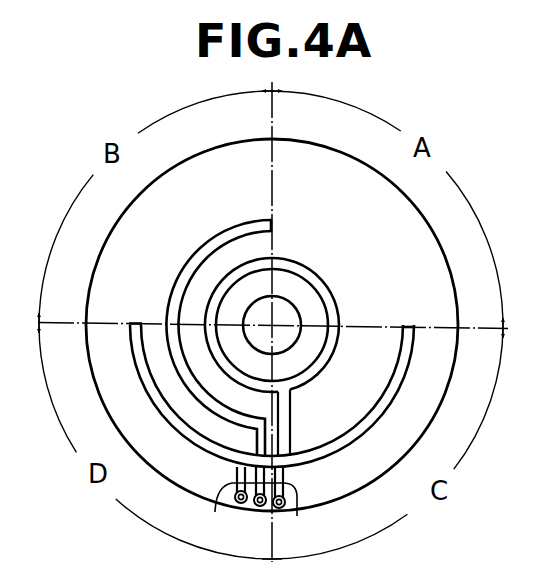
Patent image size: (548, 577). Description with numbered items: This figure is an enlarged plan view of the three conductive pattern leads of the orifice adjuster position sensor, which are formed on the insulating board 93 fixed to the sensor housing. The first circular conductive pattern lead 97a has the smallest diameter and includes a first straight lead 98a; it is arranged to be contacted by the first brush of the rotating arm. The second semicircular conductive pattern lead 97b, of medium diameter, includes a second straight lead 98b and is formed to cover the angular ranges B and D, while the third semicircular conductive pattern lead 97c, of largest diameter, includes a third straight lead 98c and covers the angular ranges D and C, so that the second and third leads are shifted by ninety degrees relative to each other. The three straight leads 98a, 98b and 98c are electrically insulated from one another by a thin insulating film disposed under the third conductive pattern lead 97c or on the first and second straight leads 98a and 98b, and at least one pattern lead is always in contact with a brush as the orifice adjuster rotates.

The insulating board 93 is at (214, 149).
The first circular conductive pattern lead 97a is at (325, 285).
The second semicircular conductive pattern lead 97b is at (243, 222).
The third semicircular conductive pattern lead 97c is at (128, 322).
The first straight lead 98a is at (292, 405).
The second straight lead 98b is at (283, 511).
The third straight lead 98c is at (234, 504).